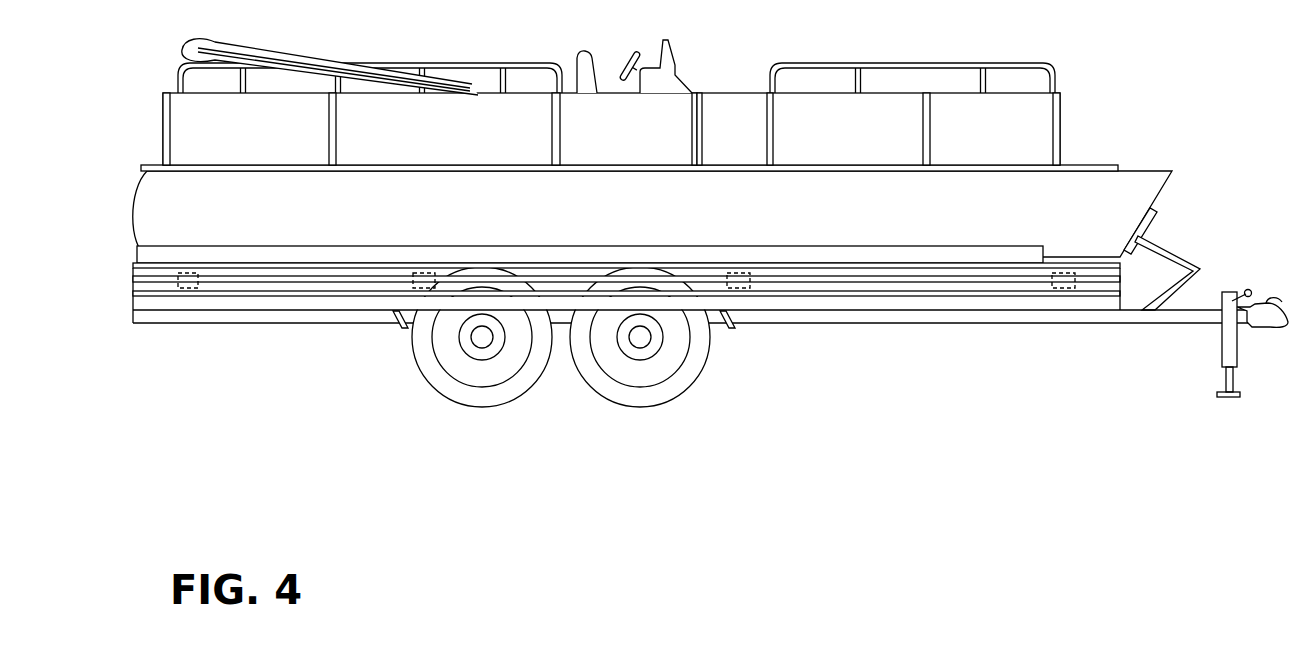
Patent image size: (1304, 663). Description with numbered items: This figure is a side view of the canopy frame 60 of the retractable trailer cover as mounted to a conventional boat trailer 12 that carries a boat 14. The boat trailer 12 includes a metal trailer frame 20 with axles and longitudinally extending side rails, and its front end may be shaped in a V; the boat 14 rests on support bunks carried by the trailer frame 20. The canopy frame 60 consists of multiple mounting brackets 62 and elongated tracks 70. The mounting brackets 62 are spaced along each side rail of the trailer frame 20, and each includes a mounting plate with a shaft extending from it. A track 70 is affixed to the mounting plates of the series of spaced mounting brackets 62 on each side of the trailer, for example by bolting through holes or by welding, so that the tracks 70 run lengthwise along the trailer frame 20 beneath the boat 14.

The boat trailer 12 is at (685, 337).
The boat 14 is at (1063, 140).
The trailer frame 20 is at (601, 350).
The canopy frame 60 is at (133, 291).
The mounting bracket 62 is at (180, 290).
The track 70 is at (270, 285).